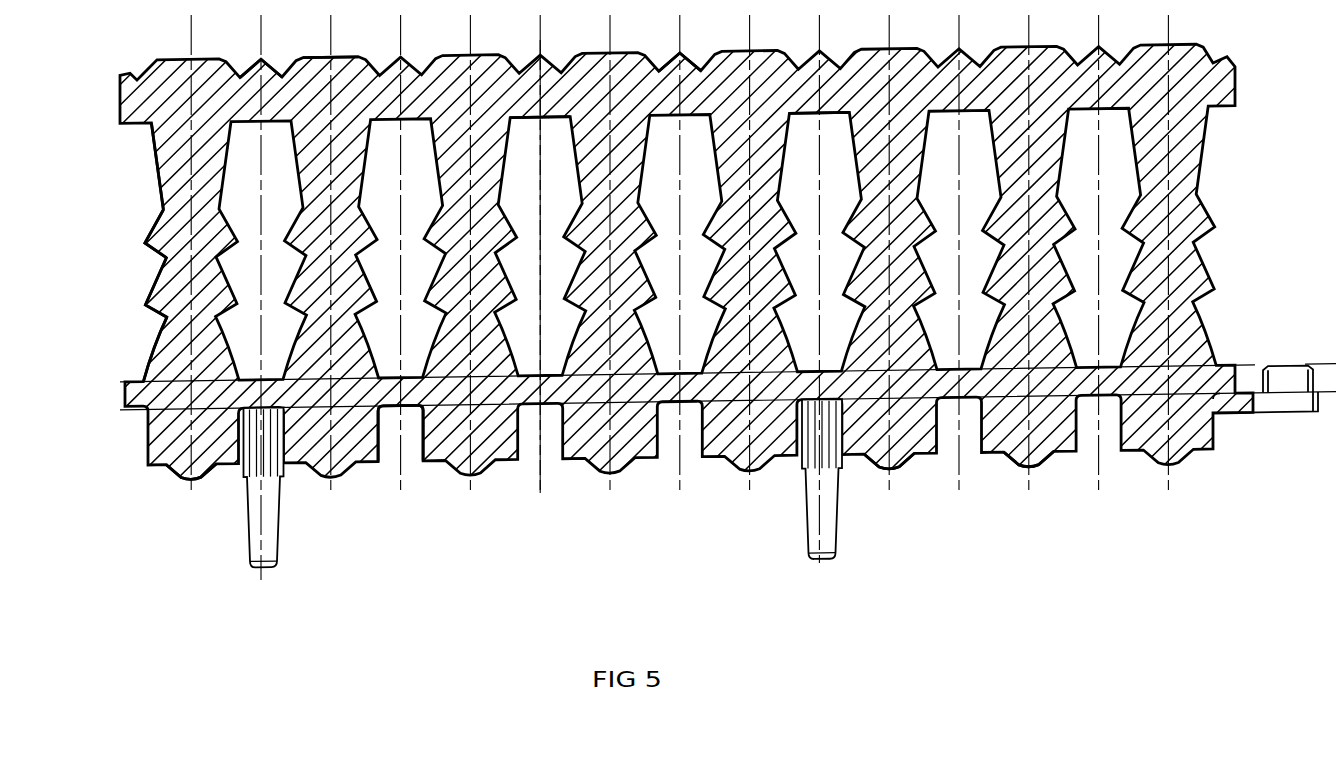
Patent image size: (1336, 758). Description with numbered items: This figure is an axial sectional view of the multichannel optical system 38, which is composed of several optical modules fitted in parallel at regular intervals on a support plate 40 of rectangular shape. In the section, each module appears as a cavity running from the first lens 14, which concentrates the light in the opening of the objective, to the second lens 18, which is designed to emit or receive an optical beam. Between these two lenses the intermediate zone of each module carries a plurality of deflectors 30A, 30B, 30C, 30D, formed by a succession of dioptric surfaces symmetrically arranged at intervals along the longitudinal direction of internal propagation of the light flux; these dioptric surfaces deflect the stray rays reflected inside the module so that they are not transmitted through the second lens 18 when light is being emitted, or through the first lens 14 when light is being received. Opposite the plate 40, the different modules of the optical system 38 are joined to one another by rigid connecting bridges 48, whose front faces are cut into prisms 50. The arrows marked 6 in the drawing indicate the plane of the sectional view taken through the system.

The multichannel optical system 38 is at (690, 532).
The prisms 50 is at (267, 57).
The second lens 18 is at (331, 57).
The rigid connecting bridges 48 is at (550, 93).
The section line 6- 6 is at (532, 40).
The deflector 30D is at (131, 166).
The deflector 30C is at (145, 242).
The deflector 30B is at (143, 302).
The deflector 30A is at (134, 349).
The first lens 14 is at (190, 477).
The support plate 40 is at (413, 408).